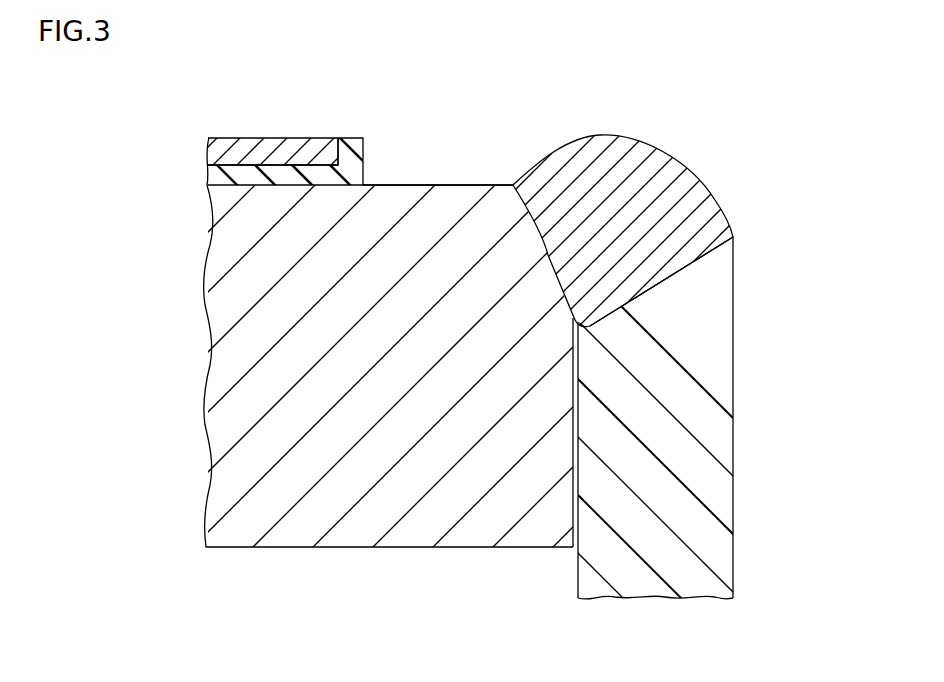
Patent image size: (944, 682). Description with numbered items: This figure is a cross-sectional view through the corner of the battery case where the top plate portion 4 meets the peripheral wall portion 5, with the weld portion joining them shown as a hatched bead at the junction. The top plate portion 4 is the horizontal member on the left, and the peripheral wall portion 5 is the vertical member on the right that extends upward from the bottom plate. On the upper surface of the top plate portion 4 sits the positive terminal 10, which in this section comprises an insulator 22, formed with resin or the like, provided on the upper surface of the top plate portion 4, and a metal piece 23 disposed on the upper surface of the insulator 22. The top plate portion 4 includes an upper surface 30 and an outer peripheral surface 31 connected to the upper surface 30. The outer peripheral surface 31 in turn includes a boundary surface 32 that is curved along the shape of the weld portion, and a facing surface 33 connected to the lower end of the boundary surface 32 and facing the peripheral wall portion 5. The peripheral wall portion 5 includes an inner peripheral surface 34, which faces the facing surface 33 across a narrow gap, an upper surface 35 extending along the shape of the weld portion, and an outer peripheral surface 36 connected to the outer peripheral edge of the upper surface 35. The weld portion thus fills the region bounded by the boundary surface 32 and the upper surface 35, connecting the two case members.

The top plate portion 4 is at (242, 343).
The peripheral wall portion 5 is at (484, 341).
The positive terminal 10 is at (451, 341).
The insulator 22 is at (285, 66).
The metal piece 23 is at (262, 150).
The upper surface 30 is at (421, 185).
The outer peripheral surface 31 is at (489, 421).
The boundary surface 32 is at (540, 237).
The facing surface 33 is at (573, 493).
The inner peripheral surface 34 is at (578, 386).
The upper surface 35 is at (676, 286).
The outer peripheral surface 36 is at (733, 421).